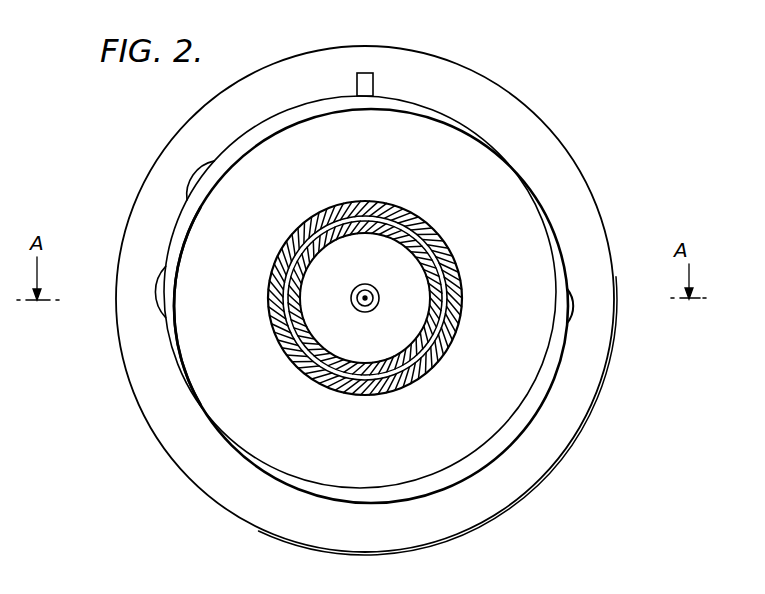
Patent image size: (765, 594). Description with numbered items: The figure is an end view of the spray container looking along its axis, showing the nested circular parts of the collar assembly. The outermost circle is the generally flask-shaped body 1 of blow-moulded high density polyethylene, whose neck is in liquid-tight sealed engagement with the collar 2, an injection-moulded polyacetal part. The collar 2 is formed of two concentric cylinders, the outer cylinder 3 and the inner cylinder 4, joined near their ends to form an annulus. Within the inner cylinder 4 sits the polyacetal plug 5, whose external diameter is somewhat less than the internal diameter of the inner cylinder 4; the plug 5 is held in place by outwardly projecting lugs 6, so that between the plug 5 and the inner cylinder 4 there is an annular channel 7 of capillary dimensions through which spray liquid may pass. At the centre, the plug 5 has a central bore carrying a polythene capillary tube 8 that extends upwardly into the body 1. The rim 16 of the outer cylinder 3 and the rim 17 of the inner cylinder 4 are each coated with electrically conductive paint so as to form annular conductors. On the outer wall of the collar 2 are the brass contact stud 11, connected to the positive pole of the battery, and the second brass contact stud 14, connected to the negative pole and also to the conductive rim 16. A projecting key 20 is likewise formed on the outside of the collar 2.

The body 1 is at (512, 500).
The collar 2 is at (495, 148).
The outer cylinder 3 is at (280, 131).
The inner cylinder 4 is at (462, 291).
The plug 5 is at (430, 337).
The lugs 6 is at (368, 393).
The annular channel 7 is at (441, 264).
The capillary tube 8 is at (373, 310).
The contact stud 11 is at (193, 174).
The second contact stud 14 is at (156, 300).
The rim of the outer cylinder 16 is at (178, 345).
The rim of the inner cylinder 17 is at (418, 221).
The projecting key 20 is at (362, 73).